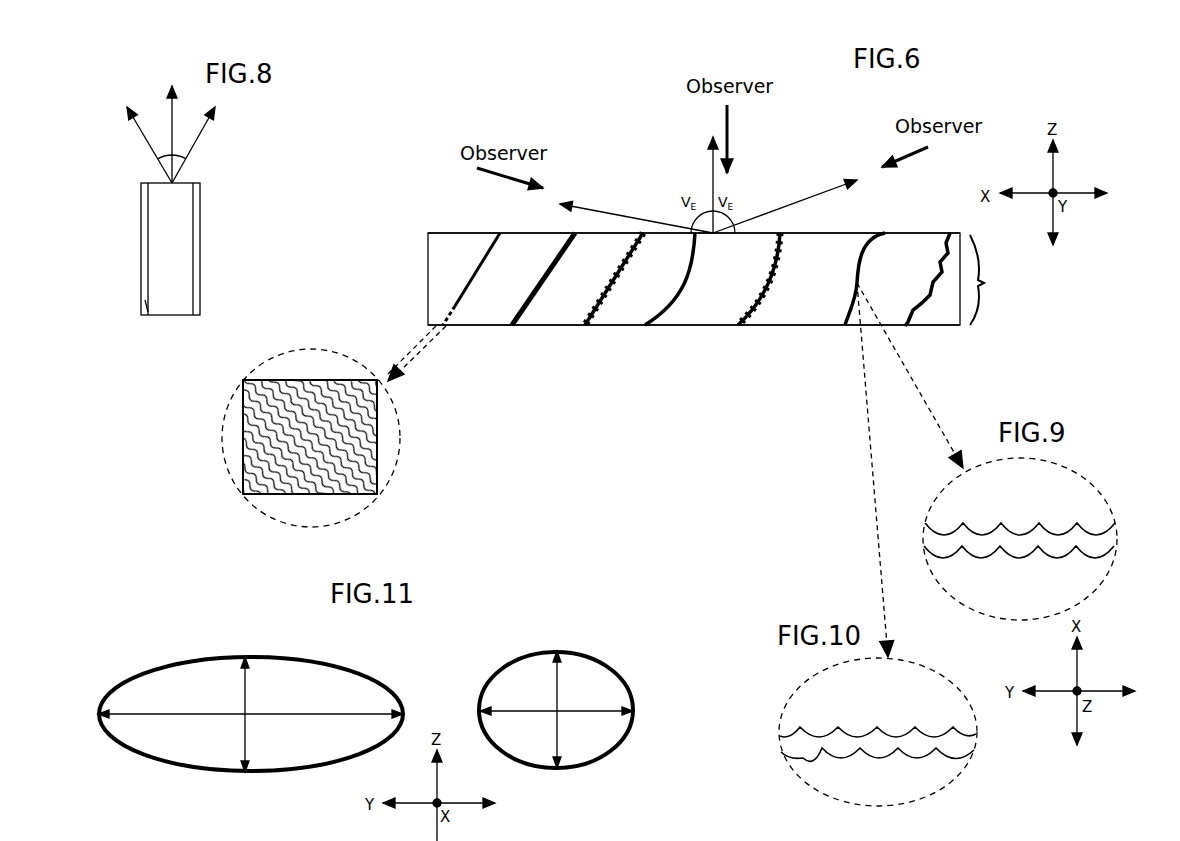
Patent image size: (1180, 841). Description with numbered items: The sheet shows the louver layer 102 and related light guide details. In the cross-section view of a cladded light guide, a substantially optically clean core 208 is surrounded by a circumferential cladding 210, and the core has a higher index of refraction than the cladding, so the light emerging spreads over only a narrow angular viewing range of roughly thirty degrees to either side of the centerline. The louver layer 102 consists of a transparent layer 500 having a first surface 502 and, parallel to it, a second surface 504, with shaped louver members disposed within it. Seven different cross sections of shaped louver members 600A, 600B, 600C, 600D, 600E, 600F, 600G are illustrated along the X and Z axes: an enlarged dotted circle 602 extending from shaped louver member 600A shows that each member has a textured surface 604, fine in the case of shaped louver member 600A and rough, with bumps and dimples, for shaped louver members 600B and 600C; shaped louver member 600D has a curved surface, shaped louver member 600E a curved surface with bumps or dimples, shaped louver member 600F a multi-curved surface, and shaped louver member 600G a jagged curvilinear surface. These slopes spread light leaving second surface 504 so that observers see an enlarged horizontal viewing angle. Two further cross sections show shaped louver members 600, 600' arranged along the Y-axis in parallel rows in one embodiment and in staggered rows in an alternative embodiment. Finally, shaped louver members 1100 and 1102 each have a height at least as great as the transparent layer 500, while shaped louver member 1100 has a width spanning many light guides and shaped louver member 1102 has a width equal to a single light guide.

In FIG. 8, the core 208 is at (115, 235).
In FIG. 8, the circumferential cladding 210 is at (145, 302).
In FIG. 6, the transparent layer 500 is at (440, 243).
In FIG. 6, the second surface 504 is at (470, 233).
In FIG. 6, the first surface 502 is at (455, 327).
In FIG. 6, the shaped louver member 600A is at (465, 275).
In FIG. 6, the shaped louver member 600B is at (518, 315).
In FIG. 6, the shaped louver member 600C is at (588, 318).
In FIG. 6, the shaped louver member 600D is at (665, 322).
In FIG. 6, the shaped louver member 600E is at (745, 322).
In FIG. 6, the shaped louver member 600F is at (840, 322).
In FIG. 6, the shaped louver member 600G is at (922, 303).
In FIG. 6, the louver layer 102 is at (994, 280).
In FIG. 6, the enlarged dotted circle 602 is at (393, 408).
In FIG. 6, the textured surface 604 is at (340, 452).
In FIG. 9, the shaped louver member 600 is at (1029, 505).
In FIG. 10, the shaped louver member 600 is at (886, 704).
In FIG. 9, the shaped louver member 600' is at (1030, 578).
In FIG. 10, the shaped louver member 600' is at (877, 778).
In FIG. 11, the shaped louver member 1100 is at (195, 655).
In FIG. 11, the shaped louver member 1102 is at (485, 672).